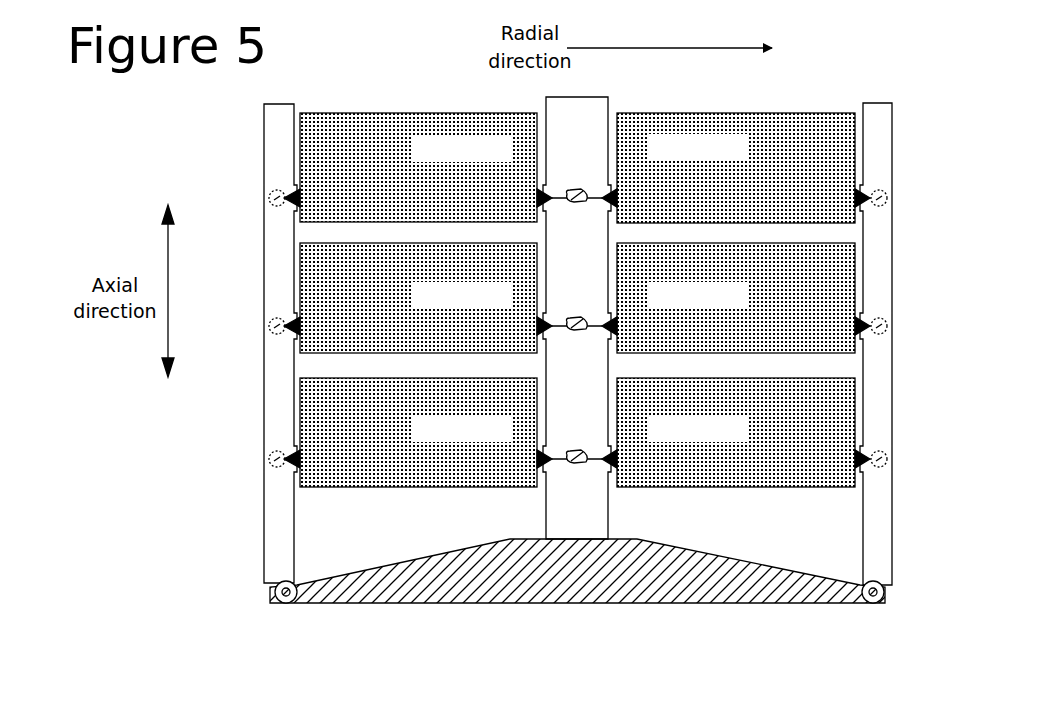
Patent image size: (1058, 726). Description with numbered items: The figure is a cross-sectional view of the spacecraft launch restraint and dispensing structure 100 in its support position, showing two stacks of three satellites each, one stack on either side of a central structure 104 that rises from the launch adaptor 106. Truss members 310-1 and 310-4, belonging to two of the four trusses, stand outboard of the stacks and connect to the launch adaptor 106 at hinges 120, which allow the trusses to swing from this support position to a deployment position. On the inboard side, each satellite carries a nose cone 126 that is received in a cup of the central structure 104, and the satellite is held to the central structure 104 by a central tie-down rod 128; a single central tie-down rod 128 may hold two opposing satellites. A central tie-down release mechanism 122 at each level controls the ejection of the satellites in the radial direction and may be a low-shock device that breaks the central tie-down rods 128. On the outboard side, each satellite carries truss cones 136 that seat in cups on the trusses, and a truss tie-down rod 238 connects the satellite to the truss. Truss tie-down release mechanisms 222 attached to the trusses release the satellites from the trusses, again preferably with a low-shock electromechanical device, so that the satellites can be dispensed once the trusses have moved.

The spacecraft launch restraint and dispensing structure 100 is at (448, 40).
The central structure 104 is at (583, 97).
The launch adaptor 106 is at (356, 604).
The hinge 120 is at (288, 607).
The central tie-down release mechanism 122 is at (582, 190).
The nose cone 126 is at (624, 204).
The central tie-down rod 128 is at (559, 207).
The truss cone 136 is at (308, 193).
The truss tie-down release mechanism 222 is at (270, 455).
The truss tie-down rod 238 is at (270, 206).
The truss member 310-1 is at (280, 117).
The truss member 310-4 is at (900, 100).